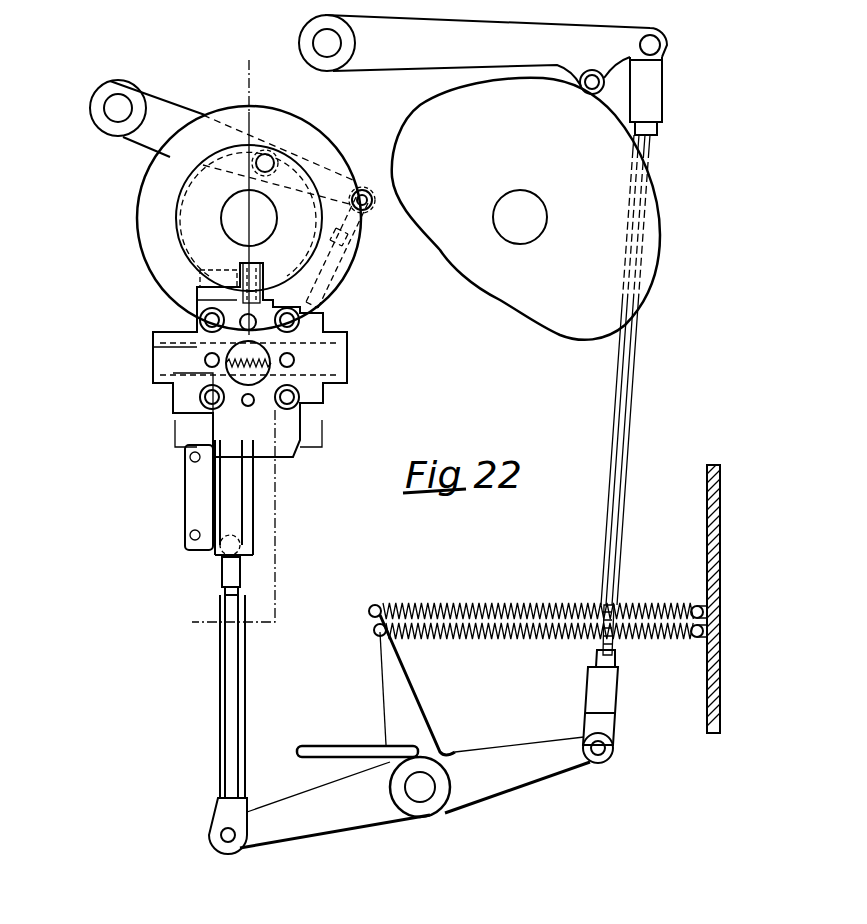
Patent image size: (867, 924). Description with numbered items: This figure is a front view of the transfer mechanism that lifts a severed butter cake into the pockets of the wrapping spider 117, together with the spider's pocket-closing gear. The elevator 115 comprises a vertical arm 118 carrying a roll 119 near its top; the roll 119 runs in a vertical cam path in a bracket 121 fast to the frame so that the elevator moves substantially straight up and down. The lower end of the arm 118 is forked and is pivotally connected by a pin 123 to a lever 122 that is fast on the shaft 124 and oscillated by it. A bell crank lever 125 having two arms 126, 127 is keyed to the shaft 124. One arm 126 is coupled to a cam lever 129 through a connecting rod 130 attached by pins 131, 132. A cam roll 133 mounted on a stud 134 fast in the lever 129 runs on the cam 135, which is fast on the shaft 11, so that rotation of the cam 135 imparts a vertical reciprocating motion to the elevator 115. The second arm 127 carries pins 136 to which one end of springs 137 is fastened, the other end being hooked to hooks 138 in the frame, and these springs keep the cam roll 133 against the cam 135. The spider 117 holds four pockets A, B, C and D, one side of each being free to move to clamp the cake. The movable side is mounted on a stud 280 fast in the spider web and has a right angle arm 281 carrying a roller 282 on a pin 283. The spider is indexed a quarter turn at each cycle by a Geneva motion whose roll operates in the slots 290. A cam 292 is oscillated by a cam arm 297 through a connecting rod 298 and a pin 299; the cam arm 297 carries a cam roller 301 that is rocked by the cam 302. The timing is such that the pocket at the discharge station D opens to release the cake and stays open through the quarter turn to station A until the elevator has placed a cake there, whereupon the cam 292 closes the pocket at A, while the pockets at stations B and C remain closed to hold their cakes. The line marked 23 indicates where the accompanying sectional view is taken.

The shaft 11 is at (538, 245).
The section line 23— 23 is at (247, 62).
The elevator 115 is at (216, 722).
The wrapping spider 117 is at (193, 408).
The vertical arm 118 is at (248, 652).
The roll 119 is at (238, 546).
The bracket 121 is at (185, 499).
The lever 122 is at (357, 831).
The pin 123 is at (218, 844).
The shaft 124 is at (422, 793).
The bell crank lever 125 is at (438, 818).
The arm of bell crank 126 is at (556, 776).
The second arm of bell crank 127 is at (421, 702).
The cam lever 129 is at (443, 69).
The connecting rod 130 is at (630, 431).
The pin 131 is at (612, 752).
The pin 132 is at (660, 43).
The cam roll 133 is at (573, 90).
The stud 134 is at (591, 95).
The cam 135 is at (523, 314).
The pins 136 is at (376, 626).
The springs 137 is at (530, 603).
The hooks 138 is at (697, 638).
The stud 280 is at (195, 409).
The right angle arm 281 is at (173, 385).
The roller 282 is at (268, 410).
The pin 283 is at (264, 403).
The slots 290 is at (153, 347).
The cam 292 is at (197, 312).
The cam arm 297 is at (357, 188).
The connecting rod 298 is at (337, 270).
The pin 299 is at (368, 212).
The cam roller 301 is at (266, 154).
The cam 302 is at (137, 238).
The pocket at station A is at (225, 434).
The pocket at station B is at (183, 347).
The pocket at station C is at (292, 245).
The pocket at station D is at (337, 383).